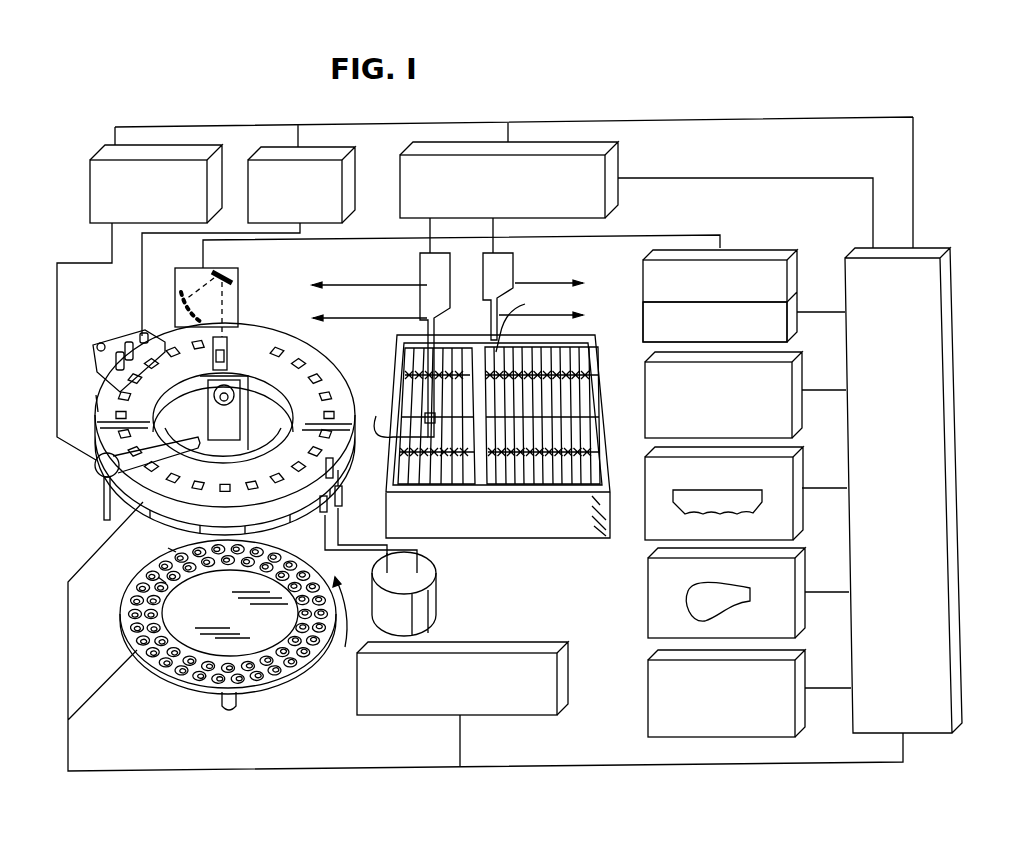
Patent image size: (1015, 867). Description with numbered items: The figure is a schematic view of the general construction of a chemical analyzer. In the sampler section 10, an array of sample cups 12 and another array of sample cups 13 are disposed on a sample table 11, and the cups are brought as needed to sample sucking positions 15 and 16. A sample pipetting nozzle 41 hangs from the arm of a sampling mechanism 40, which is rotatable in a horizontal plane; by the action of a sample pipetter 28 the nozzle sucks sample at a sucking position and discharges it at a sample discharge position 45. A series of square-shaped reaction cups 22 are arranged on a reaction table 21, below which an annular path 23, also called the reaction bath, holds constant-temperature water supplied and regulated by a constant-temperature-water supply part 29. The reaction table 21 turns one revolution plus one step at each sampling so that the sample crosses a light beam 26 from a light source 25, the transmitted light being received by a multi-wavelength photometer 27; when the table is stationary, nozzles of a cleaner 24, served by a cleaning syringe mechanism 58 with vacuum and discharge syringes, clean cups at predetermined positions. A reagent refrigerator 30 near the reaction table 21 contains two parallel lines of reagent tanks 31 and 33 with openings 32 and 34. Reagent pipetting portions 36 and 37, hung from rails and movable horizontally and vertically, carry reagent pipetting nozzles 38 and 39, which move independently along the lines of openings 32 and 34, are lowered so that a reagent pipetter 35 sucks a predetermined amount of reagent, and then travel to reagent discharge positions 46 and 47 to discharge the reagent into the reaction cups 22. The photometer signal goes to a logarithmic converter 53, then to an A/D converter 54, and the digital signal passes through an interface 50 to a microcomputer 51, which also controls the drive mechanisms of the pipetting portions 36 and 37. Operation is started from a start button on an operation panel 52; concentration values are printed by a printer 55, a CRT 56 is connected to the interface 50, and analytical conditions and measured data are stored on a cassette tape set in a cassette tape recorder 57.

The sampler section 10 is at (99, 651).
The sample table 11 is at (206, 690).
The sample cups 12 is at (290, 675).
The sample cups 13 is at (305, 655).
The sample sucking position 15 is at (170, 552).
The sample sucking position 16 is at (160, 580).
The reaction table 21 is at (96, 400).
The reaction cups 22 is at (318, 508).
The annular path (reaction bath) 23 is at (338, 500).
The cleaner 24 is at (108, 340).
The light source 25 is at (210, 413).
The light beam 26 is at (228, 332).
The multi-wavelength photometer 27 is at (233, 278).
The sample pipetter 28 is at (95, 155).
The constant-temperature-water supply part 29 is at (437, 603).
The reagent refrigerator 30 is at (585, 533).
The reagent tanks 31 is at (585, 366).
The openings 32 is at (580, 352).
The reagent tanks 33 is at (598, 420).
The openings 34 is at (600, 455).
The reagent pipetter 35 is at (612, 150).
The reagent pipetting portion 36 is at (513, 262).
The reagent pipetting portion 37 is at (420, 276).
The reagent pipetting nozzle 38 is at (526, 320).
The reagent pipetting nozzle 39 is at (395, 415).
The sampling mechanism 40 is at (95, 469).
The sample pipetting nozzle 41 is at (225, 424).
The sample discharge position 45 is at (180, 516).
The reagent discharge position 46 is at (317, 368).
The reagent discharge position 47 is at (332, 470).
The interface 50 is at (953, 302).
The microcomputer 51 is at (795, 385).
The operation panel 52 is at (515, 652).
The logarithmic converter 53 is at (768, 248).
The A/D converter 54 is at (797, 342).
The printer 55 is at (798, 462).
The CRT display 56 is at (800, 562).
The cassette tape recorder 57 is at (800, 663).
The cleaning syringe mechanism 58 is at (344, 152).